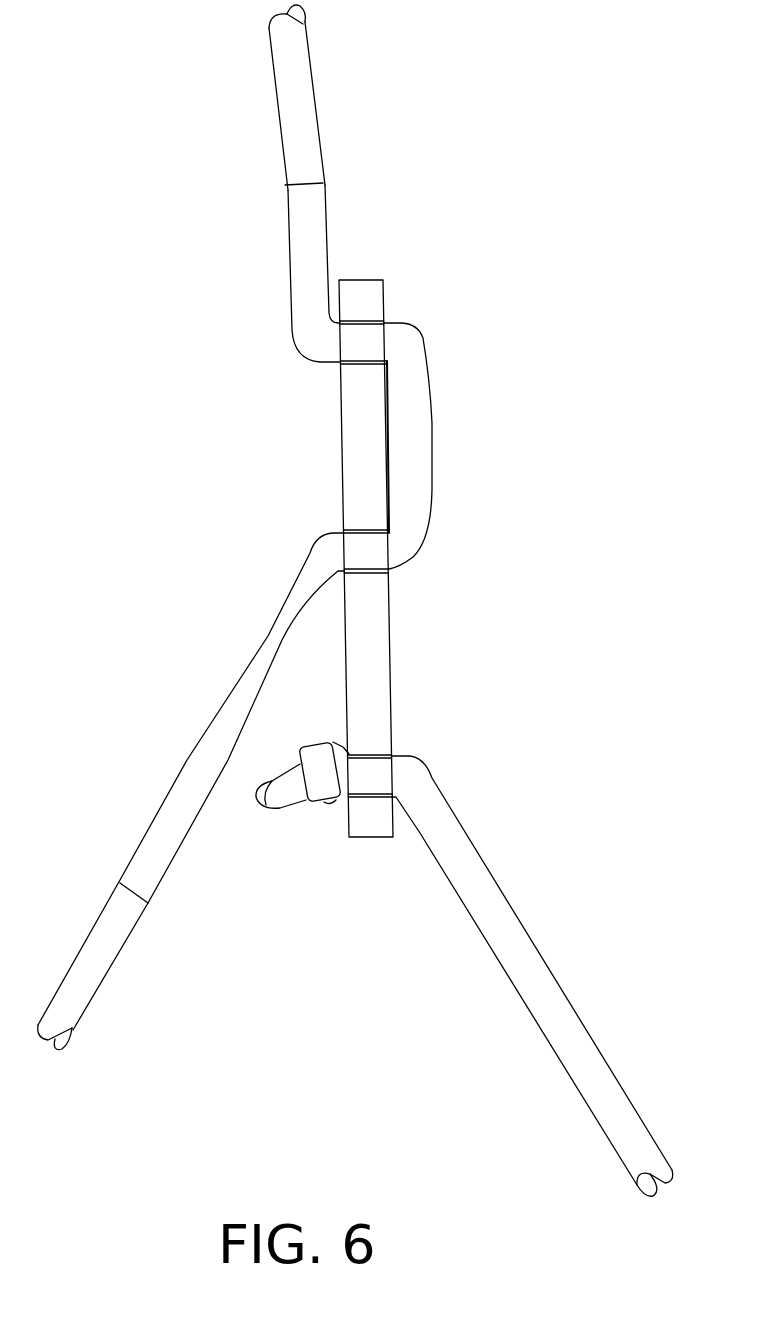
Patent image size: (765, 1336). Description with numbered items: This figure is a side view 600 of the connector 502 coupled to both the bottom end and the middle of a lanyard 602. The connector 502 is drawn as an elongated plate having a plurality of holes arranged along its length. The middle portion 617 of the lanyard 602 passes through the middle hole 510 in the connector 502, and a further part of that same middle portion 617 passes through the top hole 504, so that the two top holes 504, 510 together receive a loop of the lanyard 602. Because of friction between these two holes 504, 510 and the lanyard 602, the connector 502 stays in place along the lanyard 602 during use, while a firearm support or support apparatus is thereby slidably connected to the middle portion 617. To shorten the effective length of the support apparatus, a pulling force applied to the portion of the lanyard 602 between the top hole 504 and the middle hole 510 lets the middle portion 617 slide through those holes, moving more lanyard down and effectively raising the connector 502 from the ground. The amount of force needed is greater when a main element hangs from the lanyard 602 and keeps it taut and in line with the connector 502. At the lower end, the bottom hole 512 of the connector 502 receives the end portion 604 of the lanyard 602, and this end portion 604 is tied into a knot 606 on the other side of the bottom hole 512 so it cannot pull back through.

The side view 600 is at (190, 166).
The lanyard 602 is at (330, 136).
The middle portion 617 is at (335, 236).
The connector 502 is at (336, 483).
The top hole 504 is at (340, 369).
The middle hole 510 is at (397, 571).
The bottom hole 512 is at (398, 749).
The end portion 604 is at (510, 880).
The knot 606 is at (314, 814).